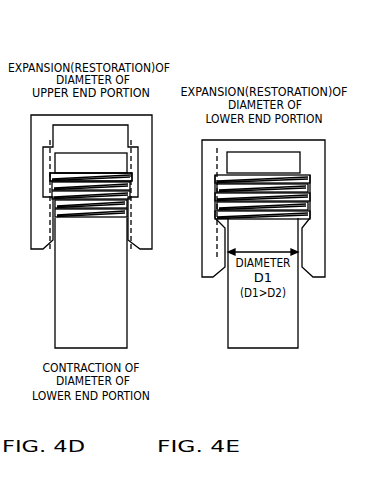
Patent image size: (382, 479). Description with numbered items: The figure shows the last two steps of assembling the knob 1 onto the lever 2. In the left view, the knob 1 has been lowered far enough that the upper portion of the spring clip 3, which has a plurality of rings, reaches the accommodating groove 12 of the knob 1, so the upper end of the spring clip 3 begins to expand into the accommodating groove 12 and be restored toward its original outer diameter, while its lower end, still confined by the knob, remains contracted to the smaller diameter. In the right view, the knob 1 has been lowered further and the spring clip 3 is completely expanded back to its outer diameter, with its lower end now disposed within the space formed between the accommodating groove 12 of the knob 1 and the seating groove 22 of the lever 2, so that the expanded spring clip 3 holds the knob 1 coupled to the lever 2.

In FIG. 4D, the knob 1 is at (147, 115).
In FIG. 4E, the knob 1 is at (323, 140).
In FIG. 4D, the lever 2 is at (127, 303).
In FIG. 4E, the lever 2 is at (298, 308).
In FIG. 4D, the spring clip 3 is at (128, 208).
In FIG. 4E, the spring clip 3 is at (310, 206).
In FIG. 4D, the accommodating groove 12 is at (134, 157).
In FIG. 4D, the seating groove 22 is at (127, 192).